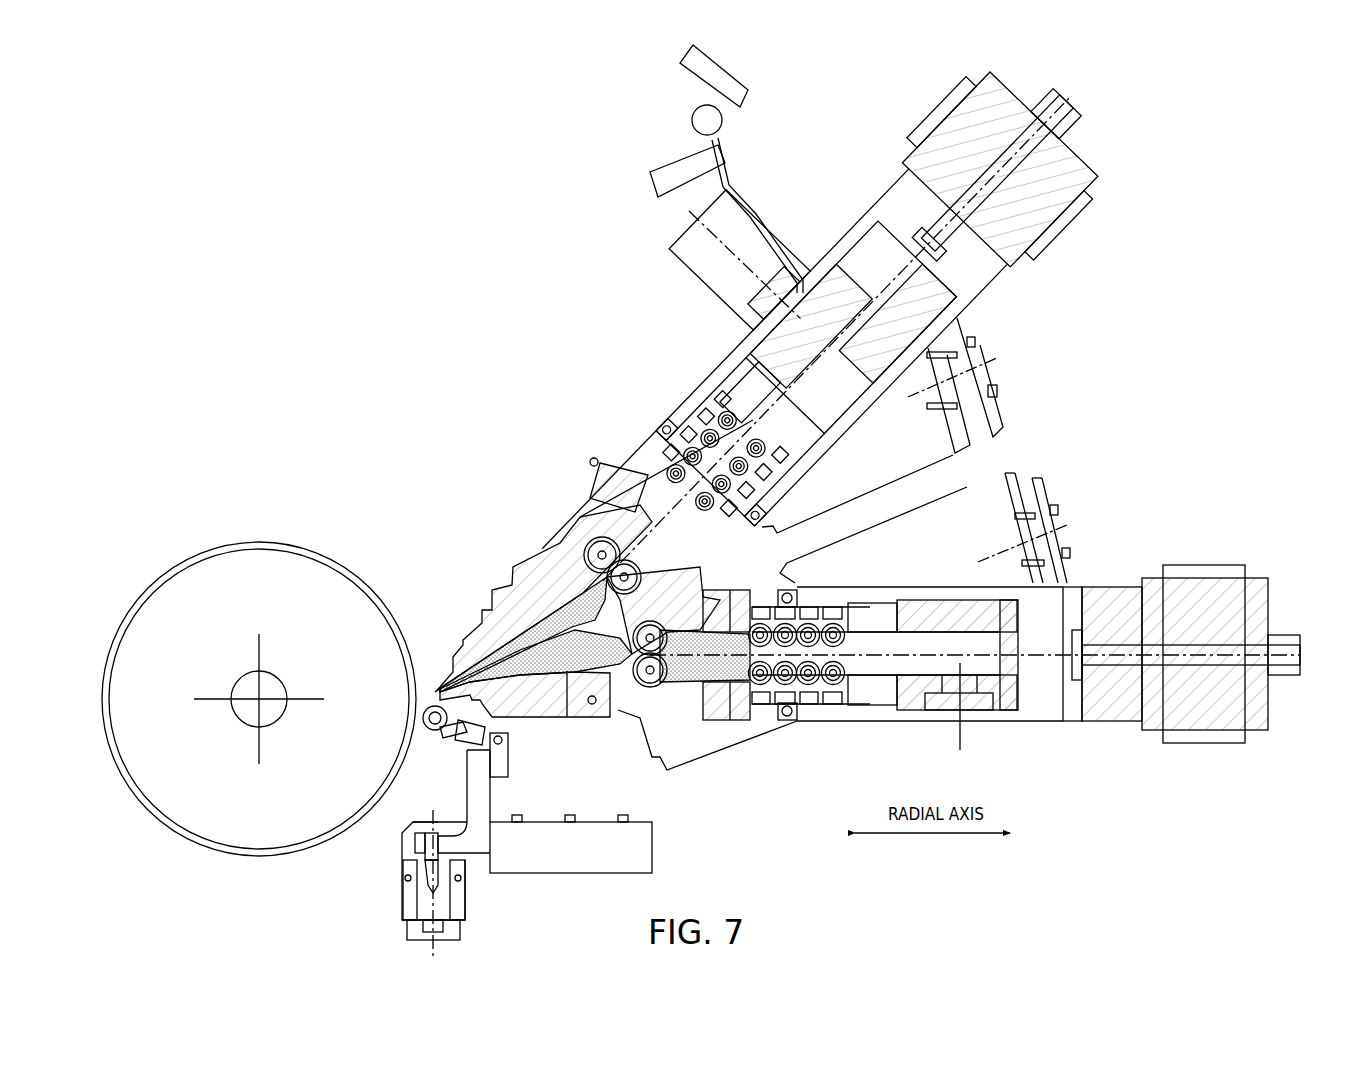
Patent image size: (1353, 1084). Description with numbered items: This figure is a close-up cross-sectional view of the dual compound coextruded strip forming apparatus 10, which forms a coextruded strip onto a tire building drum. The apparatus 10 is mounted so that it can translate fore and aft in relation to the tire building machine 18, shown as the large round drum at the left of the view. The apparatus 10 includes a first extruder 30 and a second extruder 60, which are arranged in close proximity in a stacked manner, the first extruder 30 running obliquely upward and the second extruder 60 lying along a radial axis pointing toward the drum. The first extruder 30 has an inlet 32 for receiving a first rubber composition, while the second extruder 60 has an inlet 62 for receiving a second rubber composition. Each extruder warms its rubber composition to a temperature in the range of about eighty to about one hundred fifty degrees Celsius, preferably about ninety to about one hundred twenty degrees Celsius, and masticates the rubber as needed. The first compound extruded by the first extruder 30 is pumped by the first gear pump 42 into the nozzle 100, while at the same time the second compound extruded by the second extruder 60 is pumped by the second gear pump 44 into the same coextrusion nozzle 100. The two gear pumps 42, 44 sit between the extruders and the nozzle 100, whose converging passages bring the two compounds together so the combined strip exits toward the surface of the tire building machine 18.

The coextruded strip forming apparatus 10 is at (512, 580).
The tire building machine 18 is at (259, 662).
The first extruder 30 is at (830, 344).
The inlet 32 is at (812, 293).
The first gear pump 42 is at (572, 532).
The second gear pump 44 is at (632, 707).
The second extruder 60 is at (959, 633).
The inlet 62 is at (979, 708).
The nozzle 100 is at (567, 568).